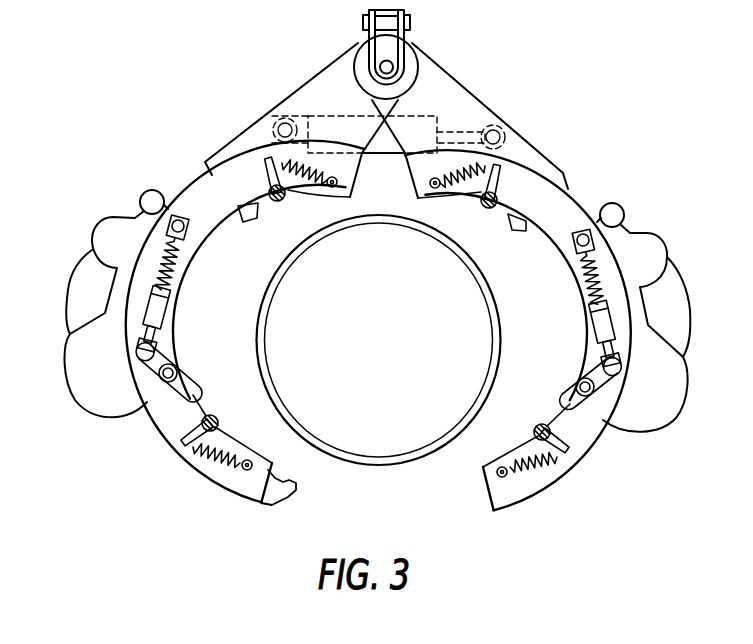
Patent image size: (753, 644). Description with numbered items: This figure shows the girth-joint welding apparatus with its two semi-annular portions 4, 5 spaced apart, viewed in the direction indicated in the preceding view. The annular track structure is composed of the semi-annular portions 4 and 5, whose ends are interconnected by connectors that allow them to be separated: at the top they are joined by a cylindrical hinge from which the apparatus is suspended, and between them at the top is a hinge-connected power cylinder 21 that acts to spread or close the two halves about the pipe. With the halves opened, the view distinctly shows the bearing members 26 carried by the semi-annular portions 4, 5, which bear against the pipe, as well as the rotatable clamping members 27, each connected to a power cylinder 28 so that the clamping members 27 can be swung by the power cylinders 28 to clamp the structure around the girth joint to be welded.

The semi-annular portion 4 is at (537, 185).
The semi-annular portion 5 is at (198, 205).
The power cylinder 21 is at (392, 140).
The bearing member 26 is at (253, 222).
The rotatable clamping member 27 is at (575, 398).
The power cylinder 28 is at (577, 265).